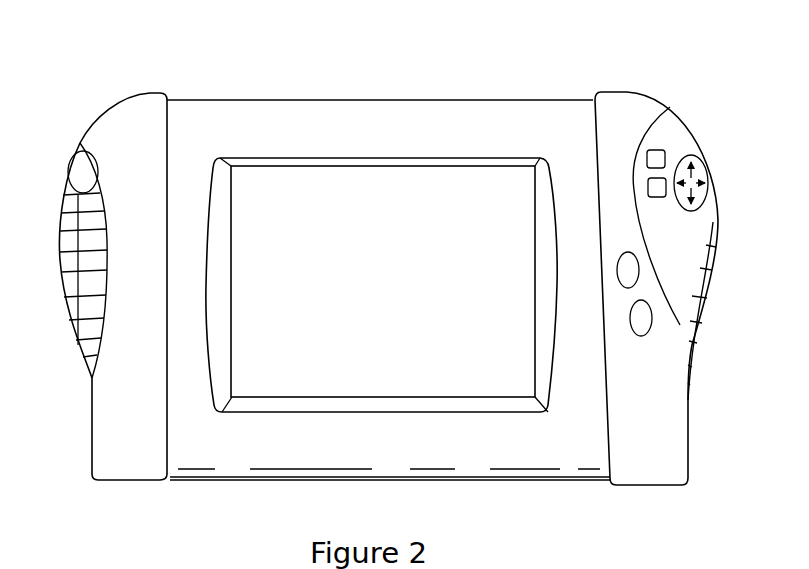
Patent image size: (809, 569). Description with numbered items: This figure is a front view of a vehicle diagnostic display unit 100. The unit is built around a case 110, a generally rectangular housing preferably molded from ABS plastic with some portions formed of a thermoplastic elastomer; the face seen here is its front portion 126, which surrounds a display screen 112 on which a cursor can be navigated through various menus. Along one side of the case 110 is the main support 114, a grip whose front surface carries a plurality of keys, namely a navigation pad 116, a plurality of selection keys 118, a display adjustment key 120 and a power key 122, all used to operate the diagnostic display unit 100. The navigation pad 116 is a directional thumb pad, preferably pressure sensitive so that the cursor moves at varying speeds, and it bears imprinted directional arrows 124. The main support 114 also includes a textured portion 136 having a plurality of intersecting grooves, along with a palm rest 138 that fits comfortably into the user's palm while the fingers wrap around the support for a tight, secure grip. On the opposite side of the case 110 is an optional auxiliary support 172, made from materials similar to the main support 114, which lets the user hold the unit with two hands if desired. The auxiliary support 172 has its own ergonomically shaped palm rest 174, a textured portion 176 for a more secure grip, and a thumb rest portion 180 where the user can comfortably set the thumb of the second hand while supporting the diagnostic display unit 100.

The vehicle diagnostic display unit 100 is at (523, 48).
The case 110 is at (405, 98).
The display screen 112 is at (397, 298).
The main support 114 is at (633, 93).
The navigation pad 116 is at (700, 160).
The selection keys 118 is at (647, 157).
The display adjustment key 120 is at (627, 250).
The power key 122 is at (641, 336).
The directional arrows 124 is at (705, 195).
The front portion 126 is at (396, 448).
The textured portion 136 is at (718, 311).
The palm rest 138 is at (708, 290).
The auxiliary support 172 is at (135, 94).
The palm rest 174 is at (60, 260).
The textured portion 176 is at (78, 292).
The thumb rest portion 180 is at (85, 160).